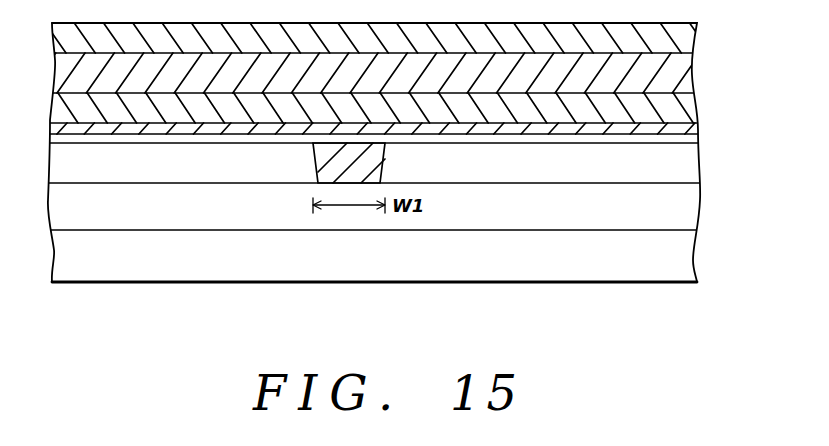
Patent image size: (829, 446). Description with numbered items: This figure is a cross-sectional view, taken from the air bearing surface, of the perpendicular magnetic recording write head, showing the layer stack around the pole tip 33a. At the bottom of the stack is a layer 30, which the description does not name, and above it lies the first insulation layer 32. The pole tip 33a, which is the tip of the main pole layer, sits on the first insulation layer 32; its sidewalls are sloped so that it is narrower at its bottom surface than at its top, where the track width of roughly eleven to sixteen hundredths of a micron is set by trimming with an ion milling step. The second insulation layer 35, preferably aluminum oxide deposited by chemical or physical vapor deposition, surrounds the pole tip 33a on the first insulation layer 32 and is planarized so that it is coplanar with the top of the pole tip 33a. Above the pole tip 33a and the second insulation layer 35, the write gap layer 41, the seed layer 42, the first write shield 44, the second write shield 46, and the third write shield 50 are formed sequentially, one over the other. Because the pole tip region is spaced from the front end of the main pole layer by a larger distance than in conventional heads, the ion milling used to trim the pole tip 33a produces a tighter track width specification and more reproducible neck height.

The substrate 30 is at (682, 257).
The first insulation layer 32 is at (682, 207).
The pole tip 33a is at (318, 167).
The second insulation layer 35 is at (682, 165).
The write gap layer 41 is at (150, 135).
The seed layer 42 is at (202, 131).
The first write shield 44 is at (686, 115).
The second write shield 46 is at (686, 75).
The third write shield 50 is at (686, 33).